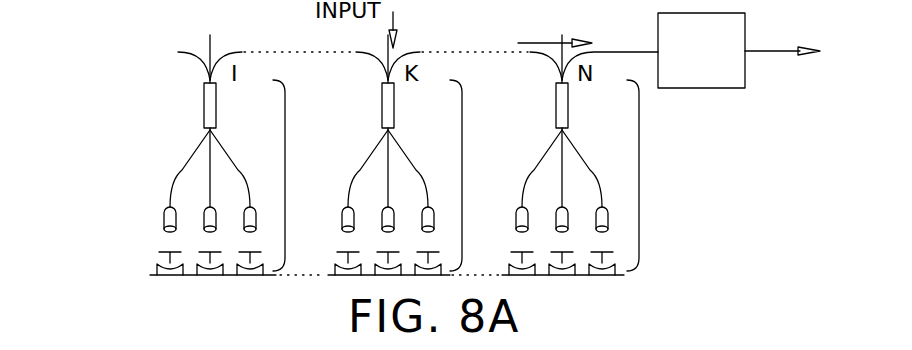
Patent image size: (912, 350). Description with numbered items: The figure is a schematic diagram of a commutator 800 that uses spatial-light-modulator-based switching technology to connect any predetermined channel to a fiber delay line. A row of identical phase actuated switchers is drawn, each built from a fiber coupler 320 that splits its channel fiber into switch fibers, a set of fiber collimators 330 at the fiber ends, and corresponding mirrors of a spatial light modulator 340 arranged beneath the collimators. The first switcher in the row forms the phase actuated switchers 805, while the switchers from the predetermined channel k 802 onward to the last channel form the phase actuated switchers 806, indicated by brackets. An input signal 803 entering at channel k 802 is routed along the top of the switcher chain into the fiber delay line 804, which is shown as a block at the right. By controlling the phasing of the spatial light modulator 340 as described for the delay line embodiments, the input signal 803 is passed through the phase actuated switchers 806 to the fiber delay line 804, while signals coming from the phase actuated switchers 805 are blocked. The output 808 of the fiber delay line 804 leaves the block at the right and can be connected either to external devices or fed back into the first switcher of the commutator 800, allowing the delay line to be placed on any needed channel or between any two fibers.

The commutator 800 is at (140, 58).
The fiber coupler 320 is at (165, 117).
The fiber collimator 330 is at (142, 230).
The spatial light modulator 340 is at (222, 284).
The predetermined channel k 802 is at (385, 52).
The input signal 803 is at (520, 42).
The fiber delay line 804 is at (700, 88).
The phase actuated switchers 805 is at (300, 176).
The phase actuated switchers {k, k+1, ..., N} 806 is at (475, 176).
The output 808 is at (767, 52).